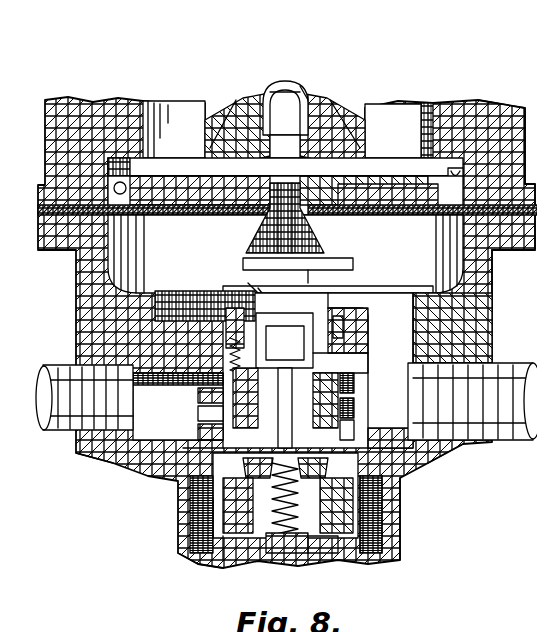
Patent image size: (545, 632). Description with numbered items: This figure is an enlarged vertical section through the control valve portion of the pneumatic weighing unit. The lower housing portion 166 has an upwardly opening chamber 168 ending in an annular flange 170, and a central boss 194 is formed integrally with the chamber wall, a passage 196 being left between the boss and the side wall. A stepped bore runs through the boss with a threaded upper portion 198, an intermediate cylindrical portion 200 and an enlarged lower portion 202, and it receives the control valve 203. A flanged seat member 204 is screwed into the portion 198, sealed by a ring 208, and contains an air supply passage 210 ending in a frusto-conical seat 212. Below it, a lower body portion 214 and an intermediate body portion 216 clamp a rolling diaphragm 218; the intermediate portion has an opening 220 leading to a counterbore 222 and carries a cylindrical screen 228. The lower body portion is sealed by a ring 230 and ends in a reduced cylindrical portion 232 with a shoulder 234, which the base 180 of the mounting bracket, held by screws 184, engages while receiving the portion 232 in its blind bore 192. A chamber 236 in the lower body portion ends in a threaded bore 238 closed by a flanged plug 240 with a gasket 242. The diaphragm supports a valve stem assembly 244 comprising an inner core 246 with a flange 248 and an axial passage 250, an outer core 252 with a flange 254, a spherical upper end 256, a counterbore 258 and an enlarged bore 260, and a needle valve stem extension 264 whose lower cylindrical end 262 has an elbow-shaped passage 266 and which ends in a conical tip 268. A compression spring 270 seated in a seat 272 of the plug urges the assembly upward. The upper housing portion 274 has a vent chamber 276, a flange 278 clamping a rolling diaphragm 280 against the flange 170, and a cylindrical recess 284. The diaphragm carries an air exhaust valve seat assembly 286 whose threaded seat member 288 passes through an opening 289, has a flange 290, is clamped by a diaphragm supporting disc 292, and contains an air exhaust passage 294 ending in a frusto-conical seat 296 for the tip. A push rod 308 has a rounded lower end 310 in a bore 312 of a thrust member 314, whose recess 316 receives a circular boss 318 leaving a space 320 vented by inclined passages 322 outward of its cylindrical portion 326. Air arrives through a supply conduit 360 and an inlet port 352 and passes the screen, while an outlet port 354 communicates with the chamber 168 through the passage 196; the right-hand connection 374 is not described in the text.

The lower housing portion 166 is at (68, 280).
The chamber 168 is at (452, 323).
The annular flange 170 is at (490, 246).
The base 180 is at (394, 522).
The screws 184 is at (182, 490).
The blind cylindrical bore 192 is at (318, 550).
The central boss 194 is at (360, 302).
The passage 196 is at (400, 358).
The threaded upper portion 198 is at (222, 305).
The intermediate cylindrical portion 200 is at (226, 318).
The enlarged cylindrical lower portion 202 is at (346, 375).
The control valve 203 is at (302, 270).
The flanged seat member 204 is at (312, 312).
The ring 208 is at (350, 325).
The air supply passage 210 is at (240, 276).
The frusto-conical seat 212 is at (222, 358).
The lower body portion 214 is at (205, 443).
The intermediate body portion 216 is at (190, 405).
The rolling diaphragm 218 is at (190, 424).
The opening 220 is at (346, 400).
The counterbore 222 is at (346, 420).
The cylindrical screen 228 is at (195, 372).
The ring 230 is at (388, 480).
The reduced cylindrical portion 232 is at (205, 542).
The shoulder 234 is at (388, 498).
The chamber 236 is at (182, 508).
The threaded bore 238 is at (225, 540).
The flanged plug 240 is at (282, 530).
The gasket 242 is at (340, 530).
The valve stem assembly 244 is at (330, 264).
The inner core 246 is at (330, 385).
The flange 248 is at (318, 469).
The axial passage 250 is at (261, 470).
The outer core 252 is at (279, 343).
The flange 254 is at (345, 440).
The upper end 256 is at (190, 388).
The counterbore 258 is at (312, 368).
The enlarged bore 260 is at (322, 334).
The lower cylindrical end 262 is at (284, 338).
The needle valve stem extension 264 is at (255, 284).
The elbow-shaped passage 266 is at (225, 370).
The conical tip 268 is at (335, 172).
The compression spring 270 is at (255, 528).
The seat 272 is at (275, 548).
The upper housing portion 274 is at (517, 100).
The vent chamber 276 is at (420, 95).
The flange 278 is at (520, 176).
The rolling diaphragm 280 is at (528, 200).
The cylindrical recess 284 is at (457, 168).
The air exhaust valve seat assembly 286 is at (350, 280).
The threaded seat member 288 is at (360, 134).
The opening 289 is at (355, 184).
The flange 290 is at (205, 230).
The diaphragm supporting disc 292 is at (150, 152).
The air exhaust passage 294 is at (285, 108).
The frusto-conical seat 296 is at (292, 236).
The push rod 308 is at (274, 73).
The rounded lower end 310 is at (288, 131).
The bore 312 is at (294, 80).
The thrust member 314 is at (176, 93).
The recess 316 is at (365, 152).
The circular boss 318 is at (360, 160).
The space 320 is at (224, 168).
The passages 322 is at (222, 96).
The cylindrical portion 326 is at (330, 95).
The inlet port 352 is at (84, 445).
The outlet port 354 is at (462, 445).
The supply conduit 360 is at (42, 425).
The outlet pipe 374 is at (505, 438).